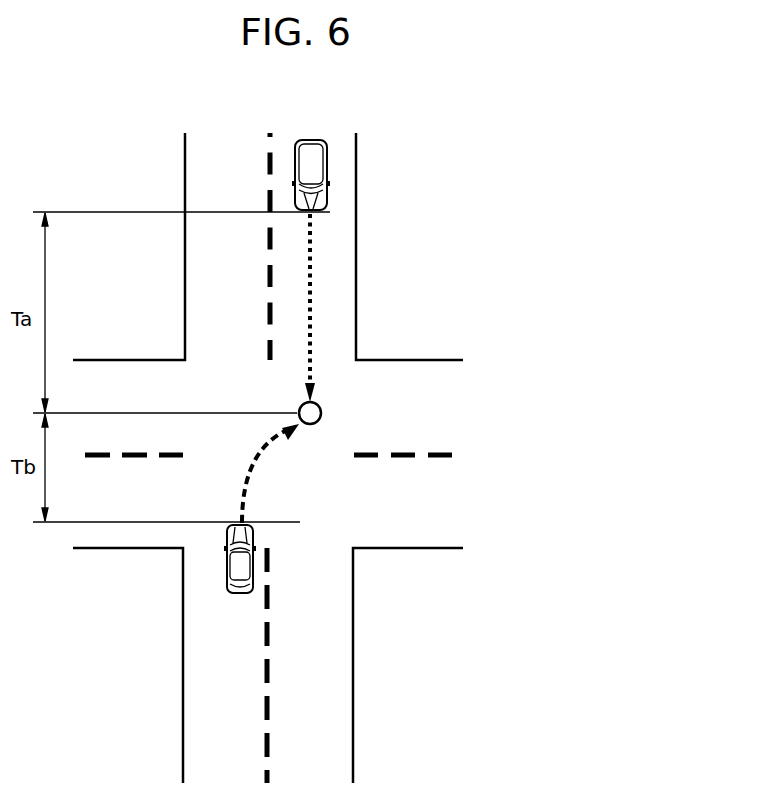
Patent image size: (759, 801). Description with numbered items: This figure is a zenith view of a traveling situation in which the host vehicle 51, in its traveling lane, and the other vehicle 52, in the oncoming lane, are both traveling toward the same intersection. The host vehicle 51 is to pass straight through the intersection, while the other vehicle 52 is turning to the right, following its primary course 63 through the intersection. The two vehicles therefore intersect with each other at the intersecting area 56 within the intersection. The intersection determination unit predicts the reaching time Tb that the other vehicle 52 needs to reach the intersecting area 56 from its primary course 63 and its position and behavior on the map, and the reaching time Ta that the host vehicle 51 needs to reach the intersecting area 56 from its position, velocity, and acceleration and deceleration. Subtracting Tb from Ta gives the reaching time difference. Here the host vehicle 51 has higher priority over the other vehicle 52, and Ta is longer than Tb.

The host vehicle 51 is at (327, 185).
The other vehicle 52 is at (226, 560).
The intersecting area 56 is at (321, 414).
The primary course 63 is at (255, 492).